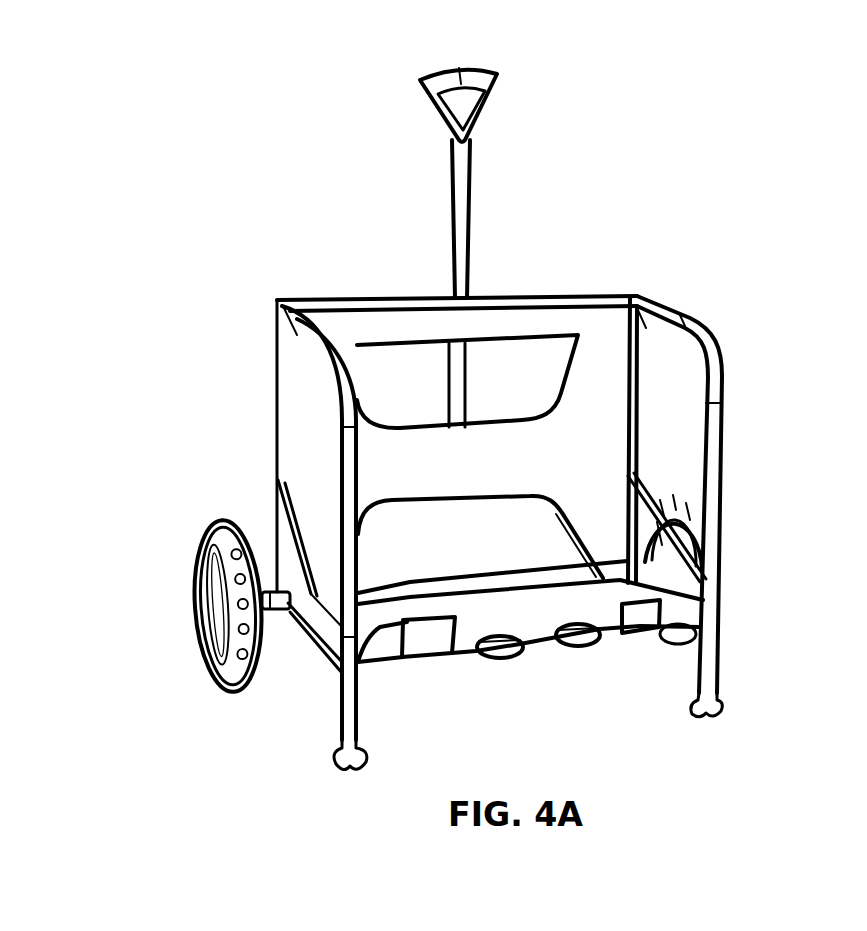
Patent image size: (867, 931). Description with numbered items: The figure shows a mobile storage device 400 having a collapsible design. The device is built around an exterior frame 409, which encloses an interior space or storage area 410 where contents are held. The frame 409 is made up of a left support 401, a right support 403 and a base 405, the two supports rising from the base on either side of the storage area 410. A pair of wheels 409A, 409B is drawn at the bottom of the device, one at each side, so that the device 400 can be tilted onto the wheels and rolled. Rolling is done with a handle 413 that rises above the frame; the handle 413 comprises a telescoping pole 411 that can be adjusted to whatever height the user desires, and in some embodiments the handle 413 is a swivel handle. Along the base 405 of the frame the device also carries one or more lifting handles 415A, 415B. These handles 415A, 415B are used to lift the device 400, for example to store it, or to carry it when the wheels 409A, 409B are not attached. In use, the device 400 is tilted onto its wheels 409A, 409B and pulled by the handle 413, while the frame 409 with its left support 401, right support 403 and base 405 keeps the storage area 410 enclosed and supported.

The mobile storage device 400 is at (263, 62).
The left support 401 is at (340, 472).
The right support 403 is at (725, 392).
The base 405 is at (315, 627).
The exterior frame 409 is at (277, 362).
The left wheel 409A is at (224, 522).
The right wheel 409B is at (676, 483).
The storage area 410 is at (608, 380).
The telescoping pole 411 is at (468, 228).
The handle 413 is at (487, 113).
The handle 415A is at (500, 657).
The handle 415B is at (585, 646).